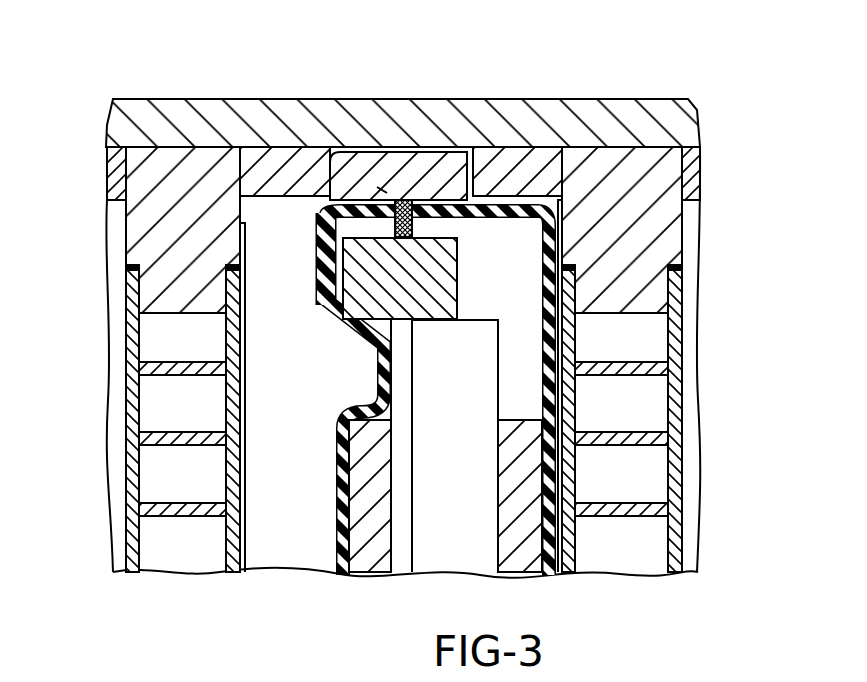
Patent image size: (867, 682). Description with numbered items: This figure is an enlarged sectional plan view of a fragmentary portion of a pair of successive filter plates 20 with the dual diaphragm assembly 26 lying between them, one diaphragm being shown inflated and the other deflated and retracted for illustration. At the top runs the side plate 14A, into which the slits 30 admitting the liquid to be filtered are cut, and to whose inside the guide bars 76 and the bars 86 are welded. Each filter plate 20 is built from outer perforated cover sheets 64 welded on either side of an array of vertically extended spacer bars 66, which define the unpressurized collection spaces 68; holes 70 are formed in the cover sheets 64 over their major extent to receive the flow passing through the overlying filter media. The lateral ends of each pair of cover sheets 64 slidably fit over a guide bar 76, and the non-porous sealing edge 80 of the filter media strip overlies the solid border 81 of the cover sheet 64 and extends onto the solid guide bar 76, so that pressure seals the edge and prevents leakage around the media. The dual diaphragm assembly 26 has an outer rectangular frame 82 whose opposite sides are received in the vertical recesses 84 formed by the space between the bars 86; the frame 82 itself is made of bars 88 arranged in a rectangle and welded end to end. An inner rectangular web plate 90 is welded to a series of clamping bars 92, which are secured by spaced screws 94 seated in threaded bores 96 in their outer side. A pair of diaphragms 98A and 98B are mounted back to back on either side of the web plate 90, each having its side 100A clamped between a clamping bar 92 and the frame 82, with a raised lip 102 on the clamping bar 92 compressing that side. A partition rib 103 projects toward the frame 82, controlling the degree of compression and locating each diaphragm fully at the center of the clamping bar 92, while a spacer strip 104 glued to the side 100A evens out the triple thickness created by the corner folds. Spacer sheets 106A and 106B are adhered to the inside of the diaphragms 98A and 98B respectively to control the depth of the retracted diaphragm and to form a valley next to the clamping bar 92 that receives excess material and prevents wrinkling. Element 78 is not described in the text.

The side plate 14A is at (518, 100).
The filter plate 20 is at (118, 532).
The dual diaphragm assembly 26 is at (350, 145).
The slits 30 is at (545, 393).
The perforated cover sheet 64 is at (580, 427).
The spacer bar 66 is at (150, 362).
The collection space 68 is at (192, 487).
The holes 70 is at (580, 332).
The guide bar 76 is at (187, 240).
The recess 78 is at (562, 163).
The sealing edge 80 is at (246, 232).
The solid border 81 is at (250, 292).
The outer rectangular frame 82 is at (420, 147).
The vertical recess 84 is at (457, 147).
The bars 86 is at (290, 188).
The frame bar 88 is at (398, 176).
The inner rectangular web plate 90 is at (445, 498).
The clamping bar 92 is at (433, 320).
The screw 94 is at (400, 198).
The threaded bore 96 is at (463, 320).
The diaphragm 98A is at (580, 523).
The diaphragm 98B is at (340, 423).
The diaphragm side 100A is at (320, 230).
The raised lip 102 is at (368, 338).
The partition rib 103 is at (378, 195).
The spacer strip 104 is at (330, 287).
The spacer sheet 106A is at (500, 419).
The spacer sheet 106B is at (372, 570).